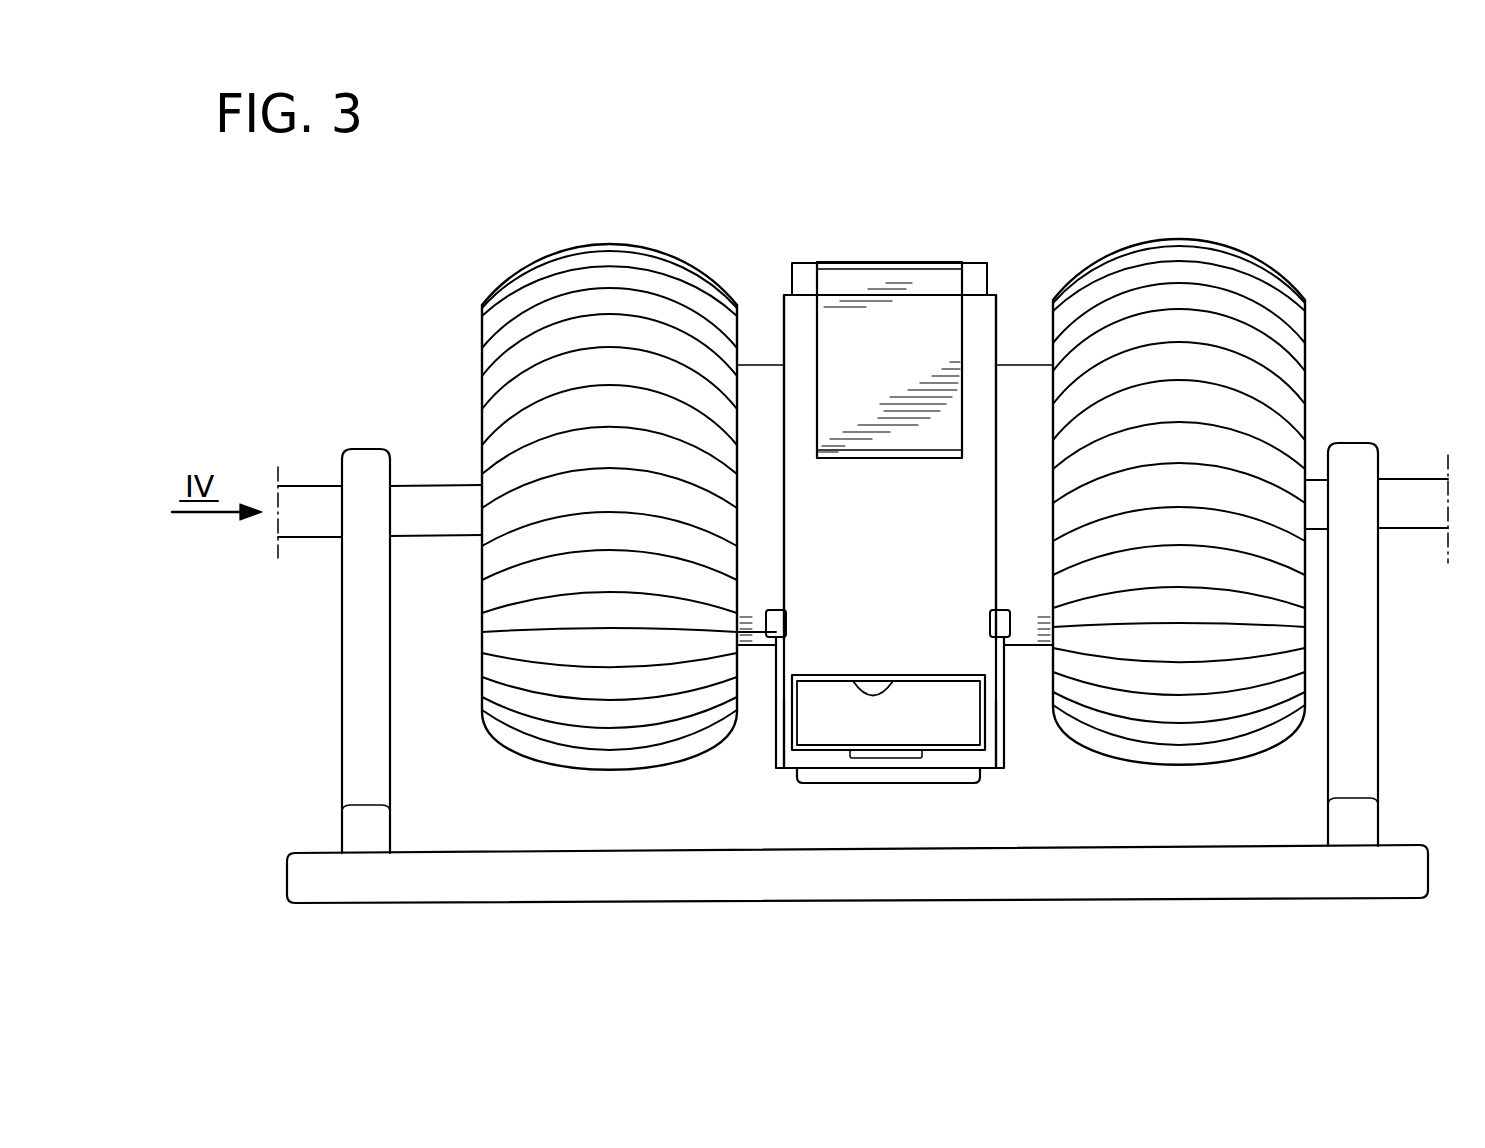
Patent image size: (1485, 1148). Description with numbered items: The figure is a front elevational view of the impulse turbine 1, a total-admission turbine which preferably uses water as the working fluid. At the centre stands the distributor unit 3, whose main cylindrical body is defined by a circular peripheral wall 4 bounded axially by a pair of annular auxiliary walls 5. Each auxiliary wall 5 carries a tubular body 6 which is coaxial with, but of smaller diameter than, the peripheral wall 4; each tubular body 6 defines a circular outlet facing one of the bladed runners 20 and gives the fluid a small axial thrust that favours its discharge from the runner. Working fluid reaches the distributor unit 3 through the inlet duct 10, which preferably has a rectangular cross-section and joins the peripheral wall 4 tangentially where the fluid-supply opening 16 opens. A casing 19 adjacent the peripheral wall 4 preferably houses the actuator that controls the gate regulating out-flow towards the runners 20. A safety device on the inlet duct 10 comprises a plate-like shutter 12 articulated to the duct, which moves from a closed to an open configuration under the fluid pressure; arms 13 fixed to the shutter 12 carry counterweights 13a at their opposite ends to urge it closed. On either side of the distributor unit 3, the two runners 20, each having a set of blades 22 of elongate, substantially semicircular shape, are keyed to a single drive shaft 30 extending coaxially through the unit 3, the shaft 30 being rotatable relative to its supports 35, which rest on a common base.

The impulse turbine 1 is at (638, 215).
The distributor unit 3 is at (983, 248).
The circular peripheral wall 4 is at (808, 262).
The annular auxiliary wall 5 is at (782, 313).
The tubular body 6 is at (780, 728).
The inlet duct 10 is at (937, 736).
The plate-like shutter 12 is at (847, 763).
The arm 13 is at (782, 744).
The counterweight 13a is at (790, 613).
The fluid-supply opening 16 is at (882, 690).
The casing 19 is at (897, 283).
The bladed runner 20 is at (508, 274).
The blade 22 is at (497, 445).
The drive shaft 30 is at (320, 505).
The support 35 is at (355, 688).